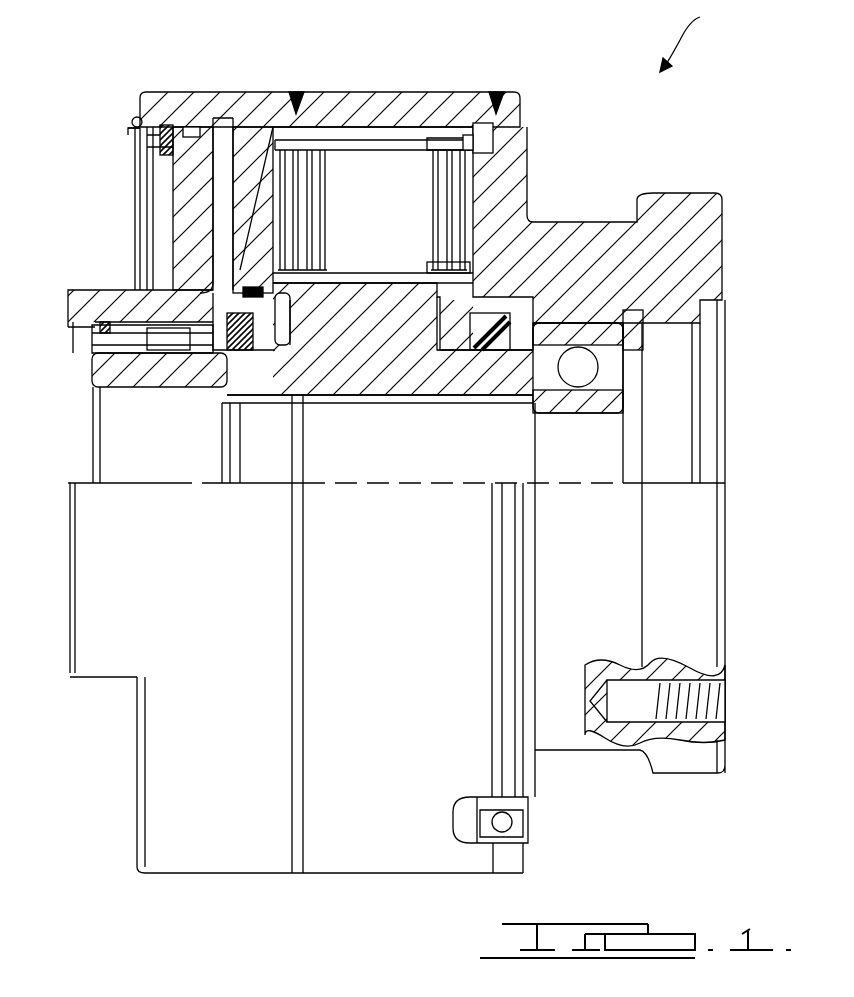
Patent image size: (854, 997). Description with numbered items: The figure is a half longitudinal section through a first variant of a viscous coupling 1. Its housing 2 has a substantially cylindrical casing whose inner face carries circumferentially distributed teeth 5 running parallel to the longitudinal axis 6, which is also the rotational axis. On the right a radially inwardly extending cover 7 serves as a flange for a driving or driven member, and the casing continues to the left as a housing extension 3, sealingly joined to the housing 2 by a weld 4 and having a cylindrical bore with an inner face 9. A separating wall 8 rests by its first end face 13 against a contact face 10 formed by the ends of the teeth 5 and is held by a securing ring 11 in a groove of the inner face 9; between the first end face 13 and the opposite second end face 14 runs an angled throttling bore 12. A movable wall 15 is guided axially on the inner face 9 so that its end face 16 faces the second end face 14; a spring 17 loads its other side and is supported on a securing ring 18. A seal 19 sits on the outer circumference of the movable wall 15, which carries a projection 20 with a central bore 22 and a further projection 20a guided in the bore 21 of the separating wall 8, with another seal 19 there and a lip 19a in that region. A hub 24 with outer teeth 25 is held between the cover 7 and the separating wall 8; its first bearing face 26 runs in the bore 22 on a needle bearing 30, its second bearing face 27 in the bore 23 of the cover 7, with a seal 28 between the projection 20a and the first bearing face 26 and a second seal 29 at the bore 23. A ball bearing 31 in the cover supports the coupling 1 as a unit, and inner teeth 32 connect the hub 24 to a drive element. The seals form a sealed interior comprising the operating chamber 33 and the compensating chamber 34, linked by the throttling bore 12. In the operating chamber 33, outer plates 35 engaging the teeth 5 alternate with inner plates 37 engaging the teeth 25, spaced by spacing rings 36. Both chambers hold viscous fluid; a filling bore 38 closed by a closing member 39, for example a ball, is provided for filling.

The viscous coupling 1 is at (688, 39).
The housing 2 is at (363, 107).
The housing extension 3 is at (238, 115).
The weld 4 is at (297, 90).
The teeth 5 is at (400, 127).
The longitudinal axis 6 is at (428, 492).
The cover 7 is at (682, 275).
The separating wall 8 is at (257, 237).
The inner face 9 is at (132, 128).
The contact face 10 is at (270, 127).
The securing ring 11 is at (230, 127).
The throttling bore 12 is at (270, 214).
The first end face 13 is at (262, 180).
The second end face 14 is at (222, 320).
The movable wall 15 is at (185, 268).
The end face 16 is at (213, 206).
The spring 17 is at (163, 150).
The securing ring 18 is at (150, 142).
The seal 19 is at (195, 128).
The stop lip 19a is at (258, 300).
The projection 20 is at (130, 310).
The further projection 20a is at (291, 345).
The bore 21 is at (240, 343).
The central bore 22 is at (88, 333).
The bore 23 is at (465, 355).
The hub 24 is at (458, 385).
The outer teeth 25 is at (387, 284).
The first bearing face 26 is at (143, 353).
The second bearing face 27 is at (522, 357).
The seal 28 is at (247, 335).
The second seal 29 is at (503, 313).
The needle bearing 30 is at (168, 353).
The ball bearing 31 is at (598, 348).
The inner teeth 32 is at (383, 403).
The operating chamber 33 is at (420, 130).
The compensating chamber 34 is at (213, 178).
The outer plates 35 is at (477, 143).
The spacing rings 36 is at (473, 158).
The inner plates 37 is at (432, 240).
The filling bore 38 is at (525, 815).
The closing member 39 is at (508, 826).